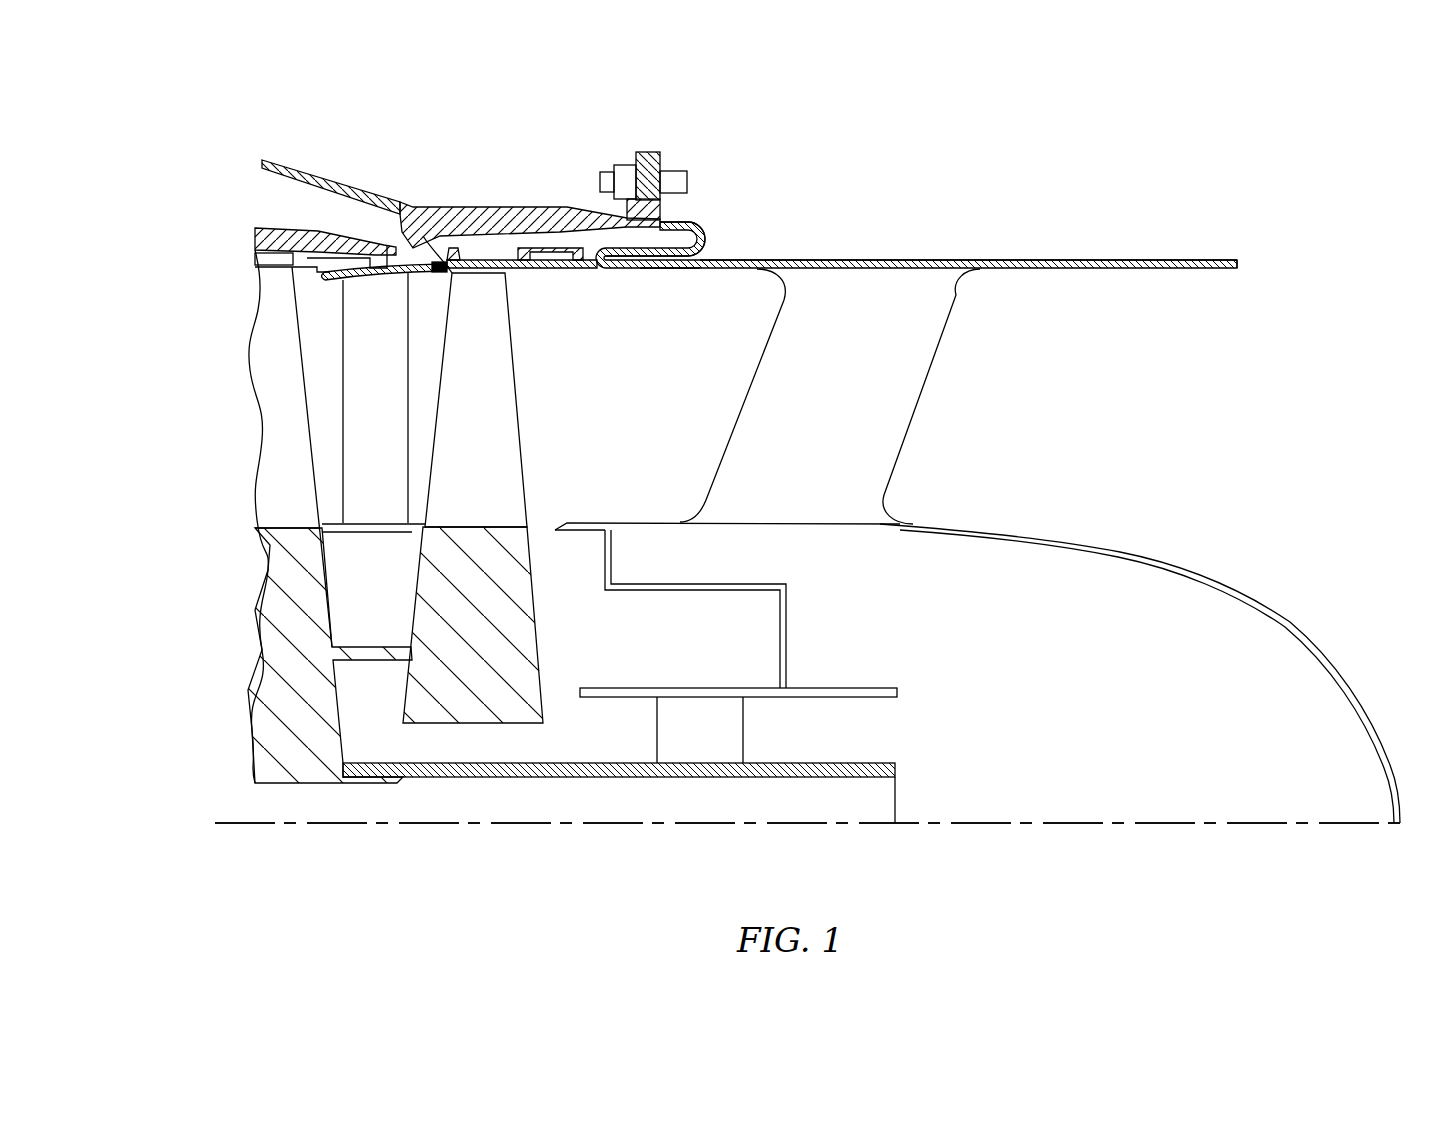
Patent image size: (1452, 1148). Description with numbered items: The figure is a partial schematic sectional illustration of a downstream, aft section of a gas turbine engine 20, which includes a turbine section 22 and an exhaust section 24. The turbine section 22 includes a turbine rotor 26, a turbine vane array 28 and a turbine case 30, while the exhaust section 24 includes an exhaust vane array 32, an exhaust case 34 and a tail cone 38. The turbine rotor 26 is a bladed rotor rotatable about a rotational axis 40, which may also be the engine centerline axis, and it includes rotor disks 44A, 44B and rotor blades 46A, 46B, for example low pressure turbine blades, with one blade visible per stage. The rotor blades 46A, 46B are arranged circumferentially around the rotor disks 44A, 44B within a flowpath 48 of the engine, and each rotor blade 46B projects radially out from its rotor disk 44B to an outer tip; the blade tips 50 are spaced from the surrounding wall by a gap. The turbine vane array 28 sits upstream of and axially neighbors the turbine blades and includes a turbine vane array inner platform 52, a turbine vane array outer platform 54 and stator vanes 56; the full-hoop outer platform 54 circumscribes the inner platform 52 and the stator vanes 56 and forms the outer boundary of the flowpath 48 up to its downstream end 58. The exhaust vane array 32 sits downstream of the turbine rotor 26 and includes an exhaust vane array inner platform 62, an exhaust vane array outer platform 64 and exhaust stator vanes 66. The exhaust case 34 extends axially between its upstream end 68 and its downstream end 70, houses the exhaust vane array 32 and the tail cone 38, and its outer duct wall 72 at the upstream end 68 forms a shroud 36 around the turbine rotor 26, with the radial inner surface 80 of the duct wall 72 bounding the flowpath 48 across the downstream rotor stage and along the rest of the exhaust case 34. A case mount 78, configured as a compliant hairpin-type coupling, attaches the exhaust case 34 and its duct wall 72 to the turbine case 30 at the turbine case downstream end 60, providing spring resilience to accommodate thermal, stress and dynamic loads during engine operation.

The gas turbine engine 20 is at (1228, 120).
The turbine section 22 is at (437, 128).
The exhaust section 24 is at (897, 145).
The turbine rotor 26 is at (540, 432).
The turbine vane array 28 is at (375, 553).
The turbine case 30 is at (498, 202).
The exhaust vane array 32 is at (930, 408).
The exhaust case 34 is at (775, 258).
The shroud 36 is at (519, 282).
The tail cone 38 is at (1200, 555).
The rotational axis 40 is at (1372, 823).
The rotor disk 44A is at (257, 632).
The rotor disk 44B is at (540, 612).
The rotor blade 46A is at (257, 443).
The rotor blade 46B is at (525, 462).
The flowpath 48 is at (680, 453).
The blade tip 50 is at (478, 262).
The turbine vane array inner platform 52 is at (347, 527).
The turbine vane array outer platform 54 is at (347, 283).
The turbine vane array stator vanes 56 is at (343, 388).
The downstream end of the outer platform 58 is at (452, 273).
The turbine case downstream end 60 is at (650, 152).
The exhaust vane array inner platform 62 is at (808, 528).
The exhaust vane array outer platform 64 is at (925, 260).
The exhaust vane array stator vanes 66 is at (935, 355).
The upstream end of the exhaust case 68 is at (423, 236).
The downstream end of the exhaust case 70 is at (1237, 263).
The outer duct wall 72 is at (672, 270).
The case mount 78 is at (708, 220).
The radial inner surface 80 is at (588, 270).